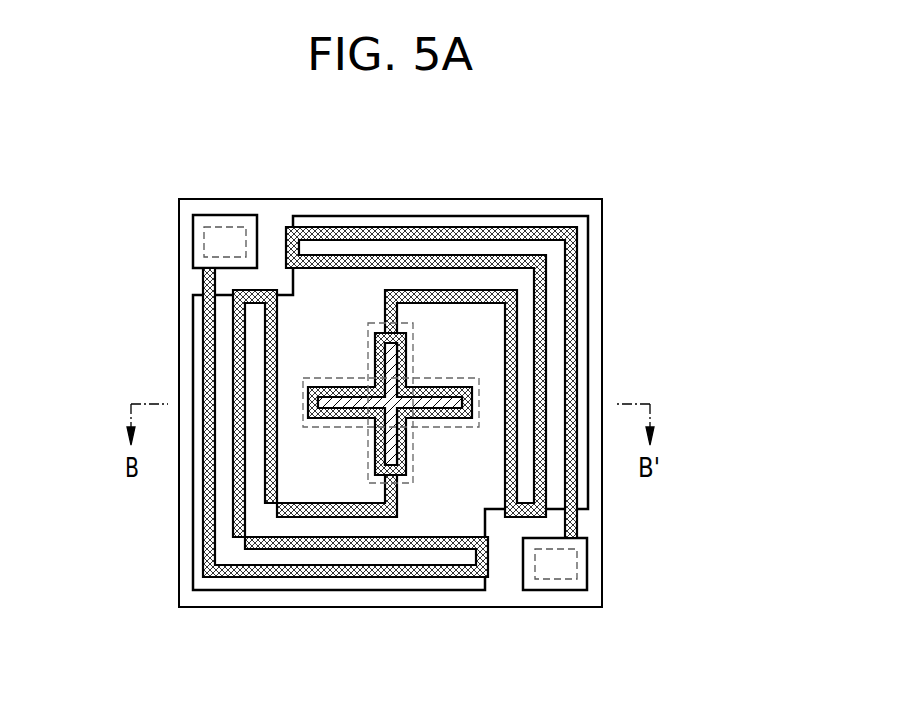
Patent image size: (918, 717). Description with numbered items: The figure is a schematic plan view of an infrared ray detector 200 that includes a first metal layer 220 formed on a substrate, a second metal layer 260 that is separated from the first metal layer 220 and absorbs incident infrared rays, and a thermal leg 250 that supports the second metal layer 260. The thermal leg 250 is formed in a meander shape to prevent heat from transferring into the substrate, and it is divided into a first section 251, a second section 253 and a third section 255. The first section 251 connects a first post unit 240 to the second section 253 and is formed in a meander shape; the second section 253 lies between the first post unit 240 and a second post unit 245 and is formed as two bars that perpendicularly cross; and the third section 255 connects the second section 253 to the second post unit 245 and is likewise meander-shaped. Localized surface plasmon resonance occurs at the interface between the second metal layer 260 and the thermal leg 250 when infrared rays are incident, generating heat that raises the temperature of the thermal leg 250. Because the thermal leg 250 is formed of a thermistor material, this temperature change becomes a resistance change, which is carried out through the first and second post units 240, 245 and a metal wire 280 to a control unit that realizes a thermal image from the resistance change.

The infrared ray detector 200 is at (630, 188).
The first metal layer 220 is at (588, 298).
The first post unit 240 is at (228, 215).
The second post unit 245 is at (557, 590).
The thermal leg 250 is at (390, 462).
The first section 251 is at (343, 577).
The second section 253 is at (407, 455).
The third section 255 is at (520, 516).
The second metal layer 260 is at (391, 363).
The metal wire 280 is at (204, 244).